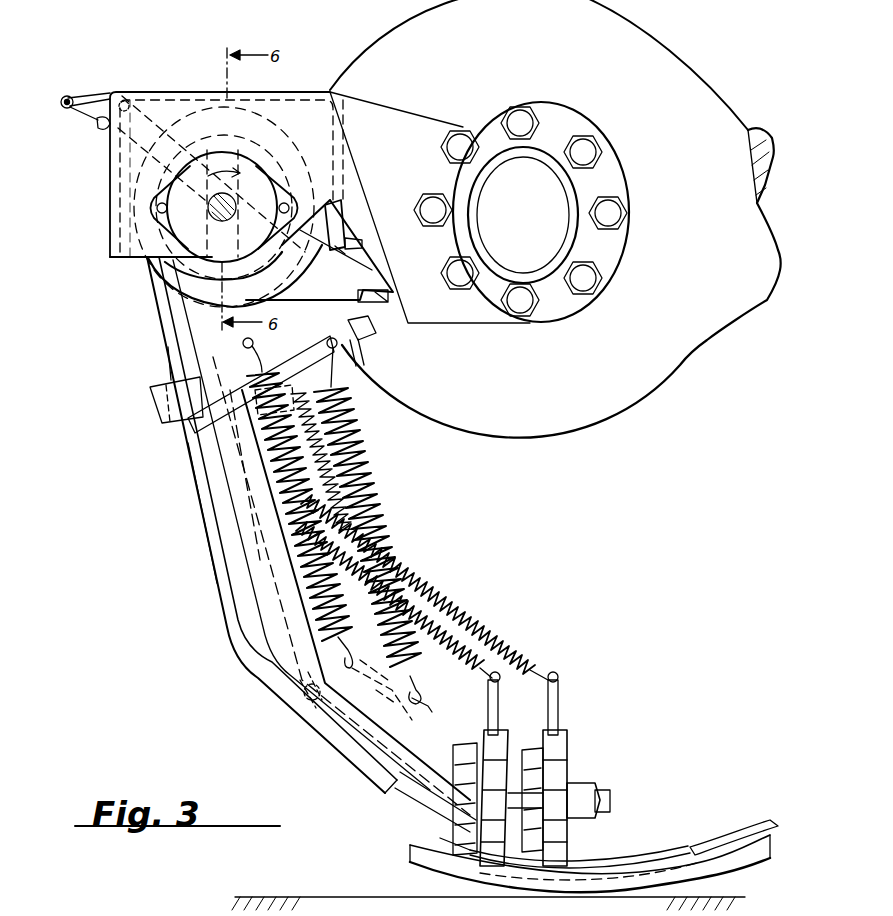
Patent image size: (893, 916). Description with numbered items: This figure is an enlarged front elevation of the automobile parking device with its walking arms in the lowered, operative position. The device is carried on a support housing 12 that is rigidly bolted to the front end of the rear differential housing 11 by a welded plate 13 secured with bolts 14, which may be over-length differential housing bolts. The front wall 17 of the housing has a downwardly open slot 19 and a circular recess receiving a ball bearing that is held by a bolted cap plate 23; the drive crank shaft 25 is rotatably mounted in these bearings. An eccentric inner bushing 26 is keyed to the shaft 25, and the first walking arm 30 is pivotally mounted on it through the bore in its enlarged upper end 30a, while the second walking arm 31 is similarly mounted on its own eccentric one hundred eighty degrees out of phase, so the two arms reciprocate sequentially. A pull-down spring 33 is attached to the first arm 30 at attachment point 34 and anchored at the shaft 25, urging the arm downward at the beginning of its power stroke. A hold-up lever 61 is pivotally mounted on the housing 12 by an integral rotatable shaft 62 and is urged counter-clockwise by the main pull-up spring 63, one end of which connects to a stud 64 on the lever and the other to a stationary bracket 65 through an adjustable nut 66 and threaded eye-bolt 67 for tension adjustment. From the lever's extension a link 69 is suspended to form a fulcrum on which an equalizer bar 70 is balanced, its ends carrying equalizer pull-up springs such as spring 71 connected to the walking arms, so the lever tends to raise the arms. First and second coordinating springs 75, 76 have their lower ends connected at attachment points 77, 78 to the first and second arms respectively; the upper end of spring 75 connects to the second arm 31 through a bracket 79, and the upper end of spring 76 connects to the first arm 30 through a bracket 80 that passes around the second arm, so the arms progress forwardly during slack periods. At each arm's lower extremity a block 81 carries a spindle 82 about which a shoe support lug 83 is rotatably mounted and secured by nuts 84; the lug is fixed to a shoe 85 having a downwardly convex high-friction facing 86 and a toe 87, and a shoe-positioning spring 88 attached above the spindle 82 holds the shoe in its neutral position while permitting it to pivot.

The rear differential housing 11 is at (662, 58).
The housing 12 is at (163, 91).
The plate 13 is at (462, 322).
The bolts 14 is at (446, 150).
The front wall 17 is at (130, 250).
The slot 19 is at (222, 268).
The cap plate 23 is at (288, 188).
The drive crank 25 is at (233, 195).
The inner bushing 26 is at (222, 288).
The first walking arm 30 is at (268, 680).
The enlarged upper end 30a is at (319, 250).
The second walking arm 31 is at (222, 622).
The pull-down spring 33 is at (290, 430).
The attachment point 34 is at (382, 689).
The hold-up lever 61 is at (92, 95).
The rotatable shaft 62 is at (128, 101).
The main pull-up spring 63 is at (97, 125).
The stud 64 is at (61, 101).
The stationary bracket 65 is at (341, 225).
The adjustable nut 66 is at (340, 252).
The threaded eye-bolt 67 is at (362, 245).
The link 69 is at (382, 300).
The equalizer bar 70 is at (368, 336).
The equalizer pull-up spring 71 is at (360, 360).
The first coordinating spring 75 is at (378, 517).
The second coordinating spring 76 is at (308, 583).
The attachment point 77 is at (427, 699).
The attachment point 78 is at (303, 720).
The bracket 79 is at (274, 400).
The bracket 80 is at (292, 350).
The block 81 is at (505, 763).
The spindle 82 is at (610, 802).
The shoe support lug 83 is at (500, 730).
The nuts 84 is at (580, 786).
The shoe 85 is at (613, 862).
The facing 86 is at (418, 862).
The toe 87 is at (748, 822).
The shoe-positioning spring 88 is at (478, 637).